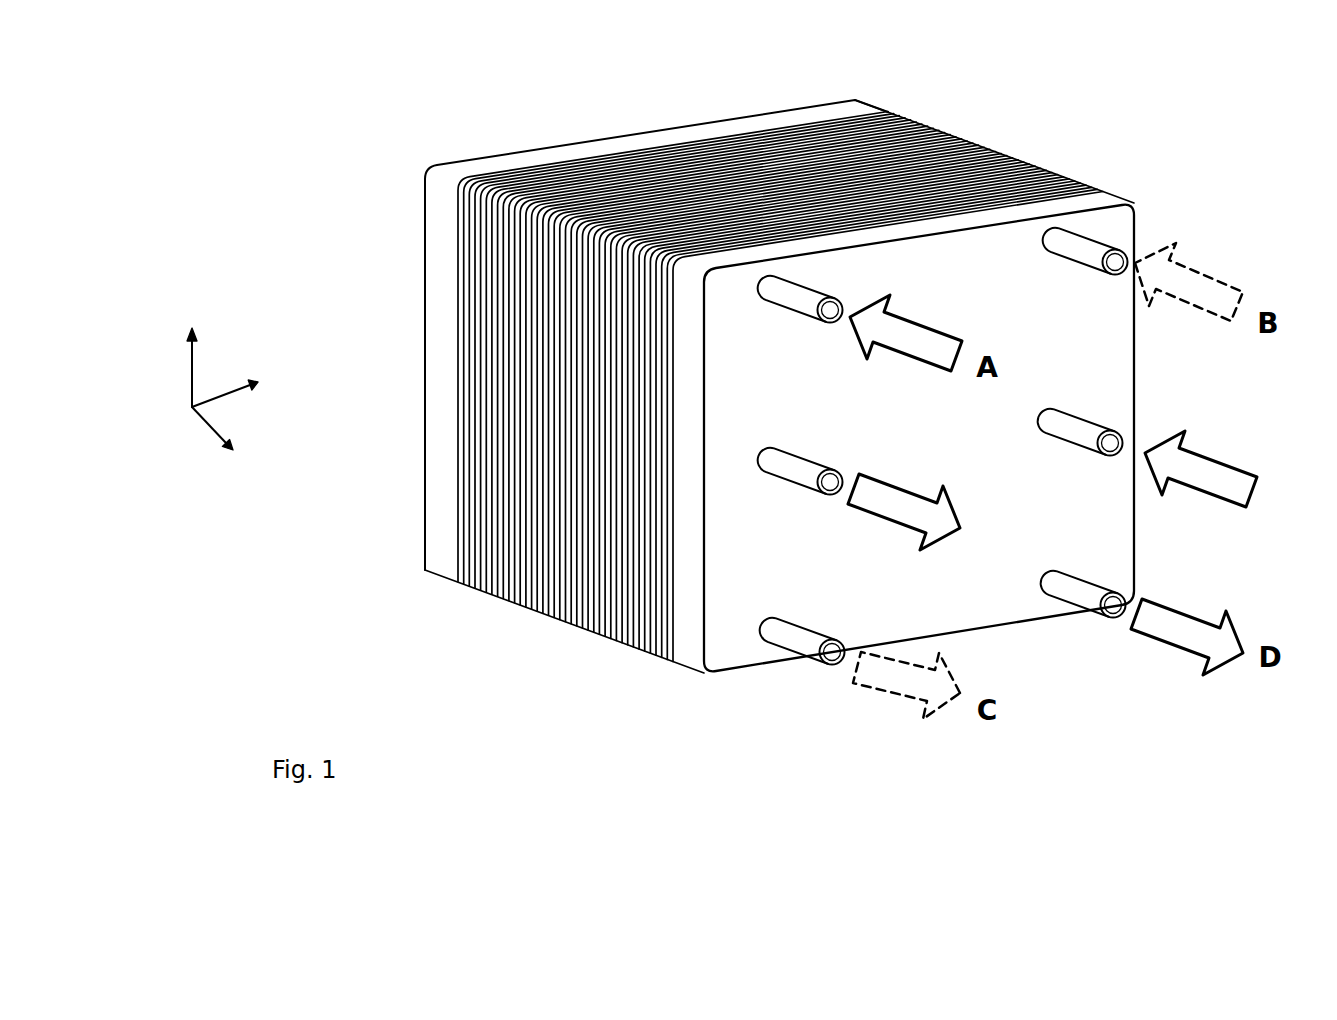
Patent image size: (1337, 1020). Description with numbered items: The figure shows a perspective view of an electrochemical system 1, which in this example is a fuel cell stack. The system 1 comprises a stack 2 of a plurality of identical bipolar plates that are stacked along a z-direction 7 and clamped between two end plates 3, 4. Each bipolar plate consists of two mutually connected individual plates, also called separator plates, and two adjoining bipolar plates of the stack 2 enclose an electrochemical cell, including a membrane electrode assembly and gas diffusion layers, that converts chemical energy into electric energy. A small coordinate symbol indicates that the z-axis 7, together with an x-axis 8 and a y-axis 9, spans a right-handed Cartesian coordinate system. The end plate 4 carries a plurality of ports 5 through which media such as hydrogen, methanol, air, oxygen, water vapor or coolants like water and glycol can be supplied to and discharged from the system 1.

The electrochemical system 1 is at (462, 99).
The stack 2 is at (880, 110).
The end plate 3 is at (443, 558).
The end plate 4 is at (695, 657).
The ports 5 is at (818, 320).
The z-direction 7 is at (207, 425).
The x-axis 8 is at (223, 392).
The y-axis 9 is at (190, 367).